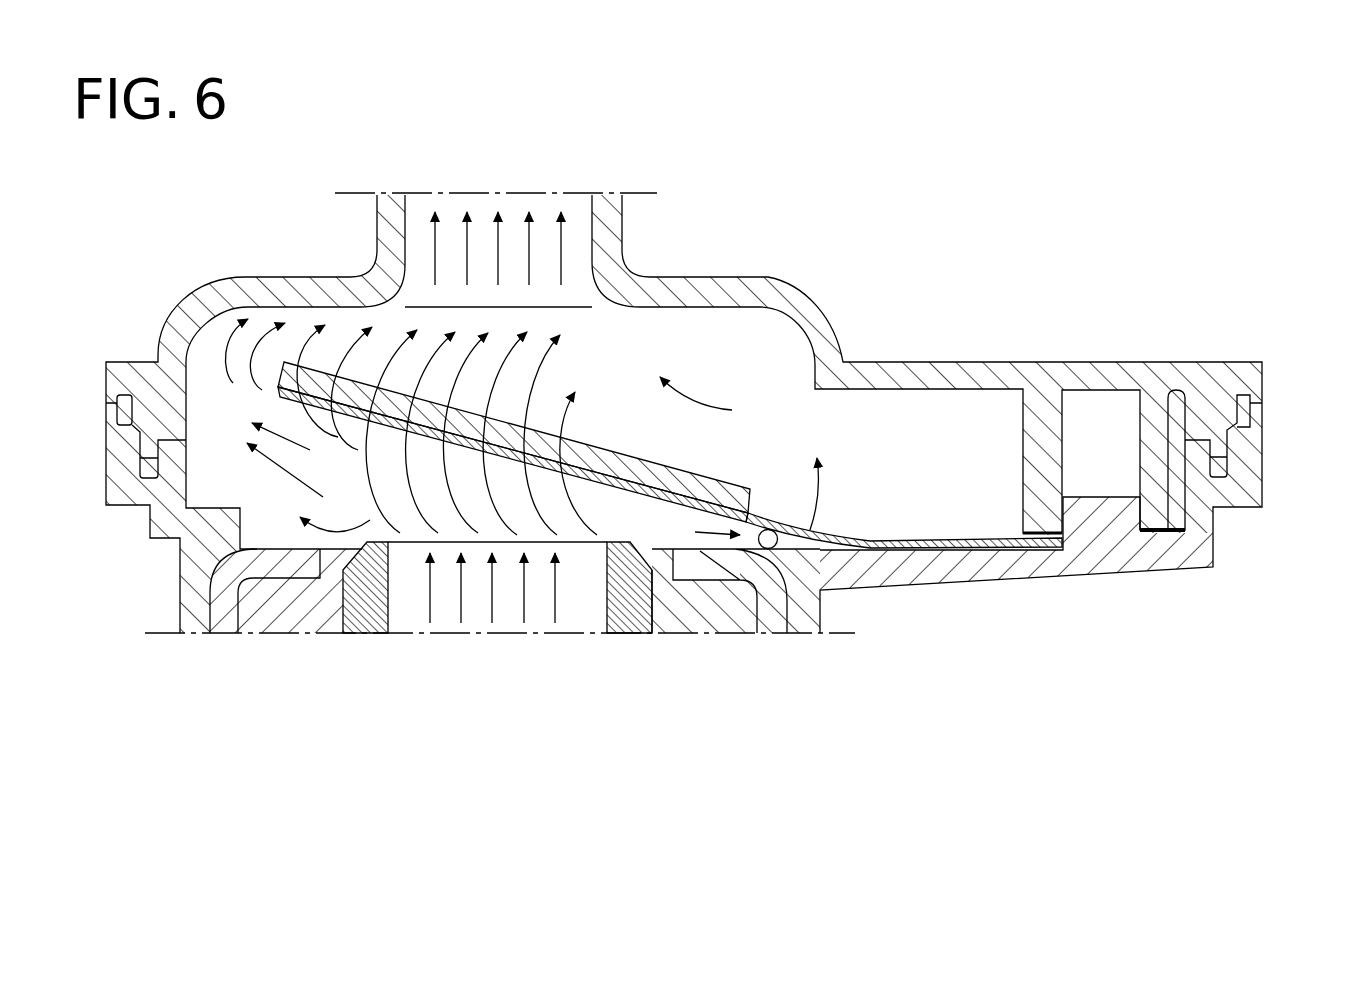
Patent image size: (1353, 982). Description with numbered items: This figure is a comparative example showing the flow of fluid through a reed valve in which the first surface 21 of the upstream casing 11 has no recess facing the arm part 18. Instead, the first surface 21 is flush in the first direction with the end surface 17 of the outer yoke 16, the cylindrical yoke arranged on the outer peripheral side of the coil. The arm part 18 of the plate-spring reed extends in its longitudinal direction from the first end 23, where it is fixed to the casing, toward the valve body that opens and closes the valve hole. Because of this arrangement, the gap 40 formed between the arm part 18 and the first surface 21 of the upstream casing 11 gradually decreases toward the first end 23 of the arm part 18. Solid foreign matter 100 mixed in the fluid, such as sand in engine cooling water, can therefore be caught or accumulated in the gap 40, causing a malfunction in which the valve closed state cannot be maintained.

The upstream casing 11 is at (1266, 478).
The outer yoke 16 is at (747, 620).
The end surface of outer yoke 17 is at (690, 550).
The arm part 18 is at (913, 542).
The first surface 21 is at (880, 538).
The first end 23 is at (1190, 530).
The gap 40 is at (791, 565).
The foreign matter 100 is at (782, 546).